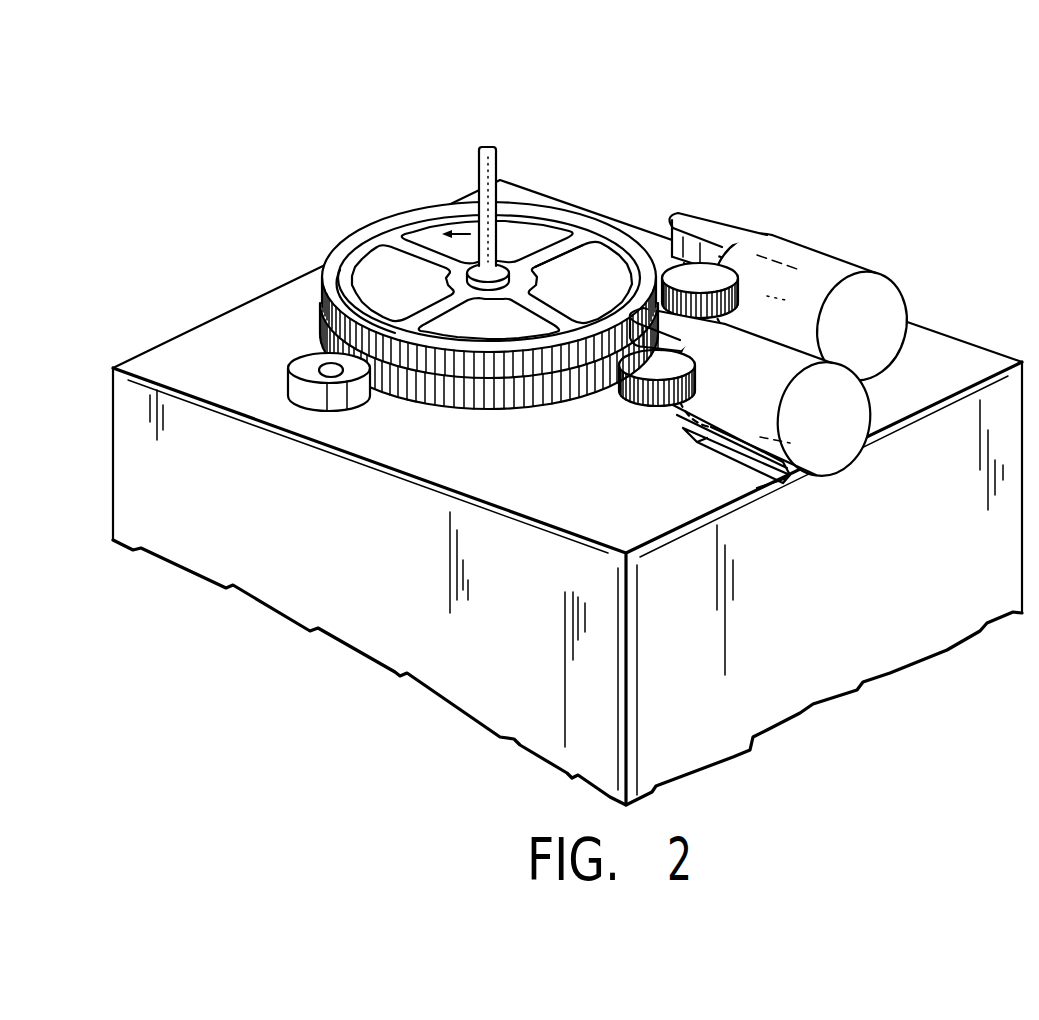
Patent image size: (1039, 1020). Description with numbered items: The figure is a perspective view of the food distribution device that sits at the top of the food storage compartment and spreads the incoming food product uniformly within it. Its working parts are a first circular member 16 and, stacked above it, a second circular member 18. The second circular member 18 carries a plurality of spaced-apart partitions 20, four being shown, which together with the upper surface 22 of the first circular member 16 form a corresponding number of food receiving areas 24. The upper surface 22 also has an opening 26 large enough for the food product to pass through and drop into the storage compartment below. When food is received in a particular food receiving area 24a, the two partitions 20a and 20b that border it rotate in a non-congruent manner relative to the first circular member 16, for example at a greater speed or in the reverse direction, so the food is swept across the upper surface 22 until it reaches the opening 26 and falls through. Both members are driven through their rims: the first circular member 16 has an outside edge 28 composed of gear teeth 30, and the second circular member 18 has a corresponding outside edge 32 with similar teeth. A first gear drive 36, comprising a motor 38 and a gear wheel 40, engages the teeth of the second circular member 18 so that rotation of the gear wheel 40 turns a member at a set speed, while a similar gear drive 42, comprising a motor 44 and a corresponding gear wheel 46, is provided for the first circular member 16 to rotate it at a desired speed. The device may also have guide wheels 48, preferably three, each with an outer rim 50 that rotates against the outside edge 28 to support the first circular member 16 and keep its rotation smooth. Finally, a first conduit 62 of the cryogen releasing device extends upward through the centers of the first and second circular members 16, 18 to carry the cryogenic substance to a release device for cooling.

The first circular member 16 is at (385, 330).
The second circular member 18 is at (513, 215).
The partitions 20 is at (400, 228).
The partition 20a is at (385, 320).
The partition 20b is at (538, 300).
The upper surface 22 is at (364, 303).
The food receiving areas 24 is at (428, 377).
The food receiving area 24a is at (422, 330).
The opening 26 is at (489, 458).
The outside edge 28 is at (584, 405).
The gear teeth 30 is at (610, 373).
The outside edge 32 is at (457, 365).
The first gear drive 36 is at (744, 286).
The motor 38 is at (810, 263).
The gear wheel 40 is at (664, 266).
The gear drive 42 is at (806, 513).
The motor 44 is at (733, 401).
The gear wheel 46 is at (650, 410).
The guide wheels 48 is at (270, 405).
The outer rim 50 is at (318, 404).
The first conduit 62 is at (480, 170).